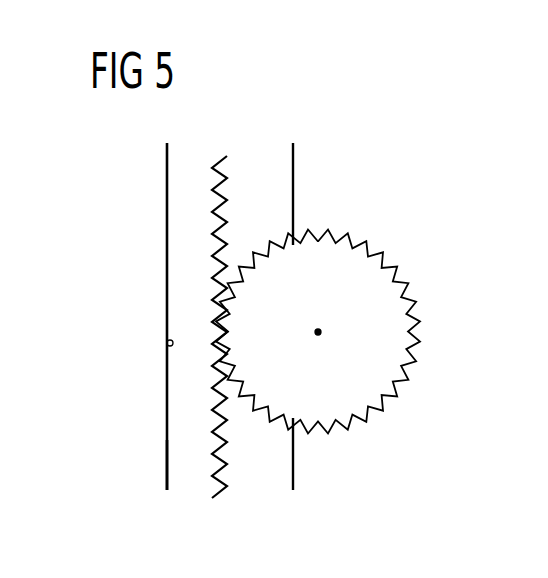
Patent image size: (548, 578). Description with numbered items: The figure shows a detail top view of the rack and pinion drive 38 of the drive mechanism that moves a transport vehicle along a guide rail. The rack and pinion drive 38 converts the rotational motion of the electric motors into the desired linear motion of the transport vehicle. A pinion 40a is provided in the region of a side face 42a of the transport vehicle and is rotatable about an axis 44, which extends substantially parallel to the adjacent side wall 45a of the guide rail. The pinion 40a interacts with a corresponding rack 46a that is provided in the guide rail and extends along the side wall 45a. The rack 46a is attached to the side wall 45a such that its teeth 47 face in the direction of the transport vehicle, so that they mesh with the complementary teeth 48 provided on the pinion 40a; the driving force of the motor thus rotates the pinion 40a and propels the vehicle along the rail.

The rack and pinion drive 38 is at (392, 205).
The pinion 40a is at (388, 353).
The side face of the transport vehicle 42a is at (294, 152).
The axis 44 is at (322, 332).
The side wall of the guide rail 45a is at (167, 343).
The rack 46a is at (187, 480).
The teeth of the rack 47 is at (225, 488).
The teeth of the pinion 48 is at (245, 258).